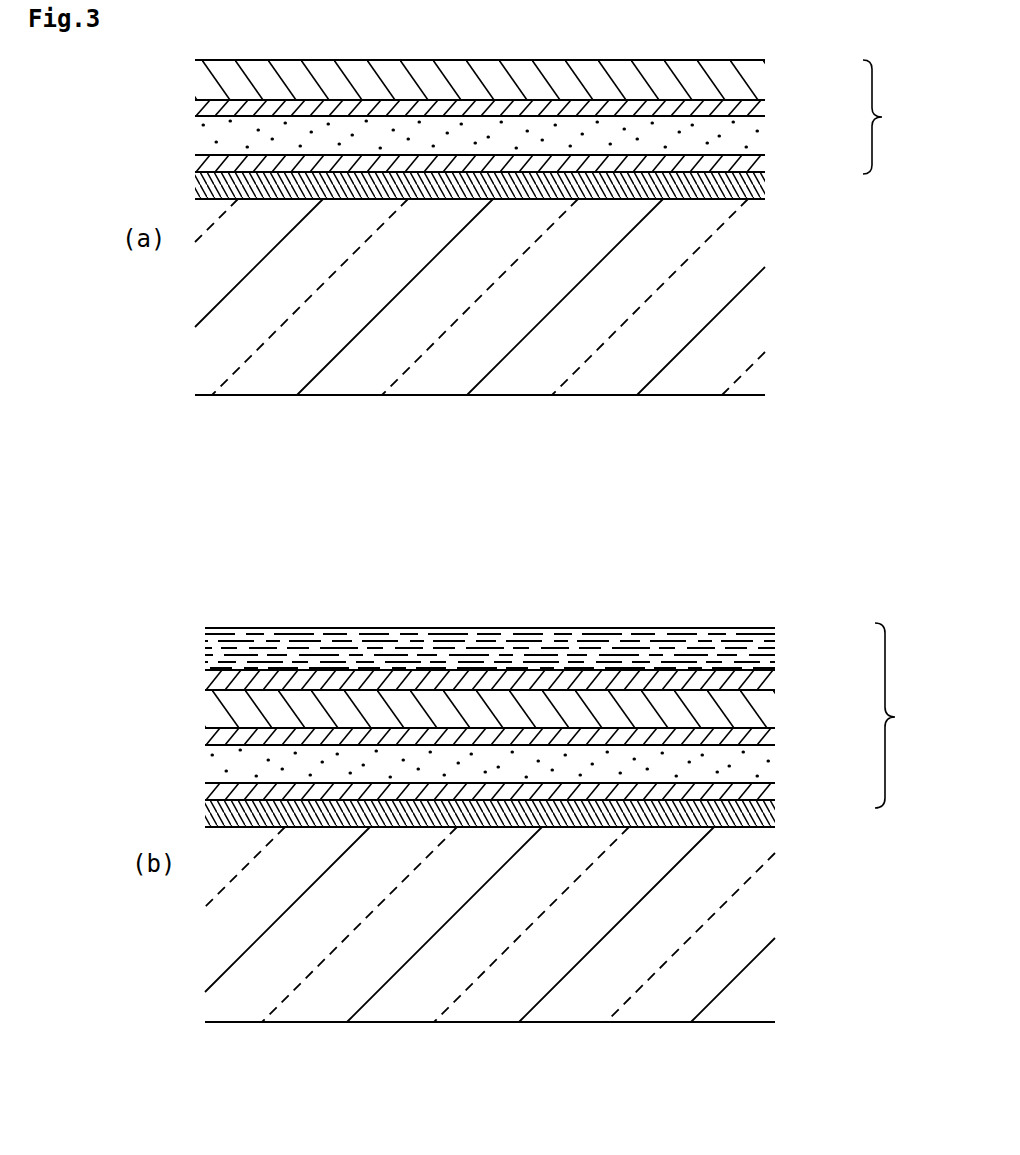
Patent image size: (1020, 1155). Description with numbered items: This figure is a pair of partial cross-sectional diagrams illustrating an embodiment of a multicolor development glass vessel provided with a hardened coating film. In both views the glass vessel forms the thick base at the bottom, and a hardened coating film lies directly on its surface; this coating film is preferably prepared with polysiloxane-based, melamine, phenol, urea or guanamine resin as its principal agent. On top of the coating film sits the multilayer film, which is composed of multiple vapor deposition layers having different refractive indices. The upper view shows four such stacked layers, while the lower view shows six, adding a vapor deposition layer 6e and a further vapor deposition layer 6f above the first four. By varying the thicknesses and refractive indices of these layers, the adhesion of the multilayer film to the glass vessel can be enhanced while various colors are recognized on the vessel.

The vapor deposition layer 6e is at (778, 684).
The vapor deposition layer 6f is at (778, 641).